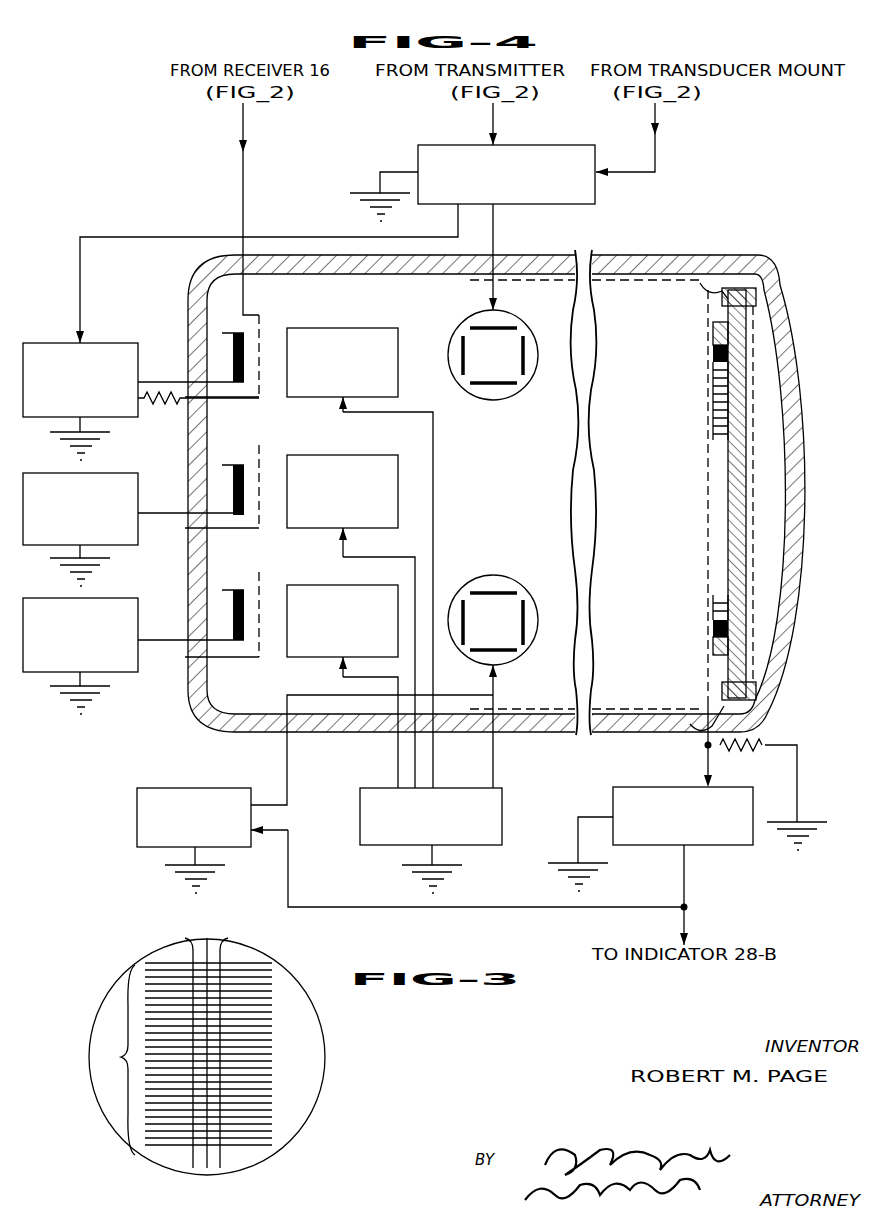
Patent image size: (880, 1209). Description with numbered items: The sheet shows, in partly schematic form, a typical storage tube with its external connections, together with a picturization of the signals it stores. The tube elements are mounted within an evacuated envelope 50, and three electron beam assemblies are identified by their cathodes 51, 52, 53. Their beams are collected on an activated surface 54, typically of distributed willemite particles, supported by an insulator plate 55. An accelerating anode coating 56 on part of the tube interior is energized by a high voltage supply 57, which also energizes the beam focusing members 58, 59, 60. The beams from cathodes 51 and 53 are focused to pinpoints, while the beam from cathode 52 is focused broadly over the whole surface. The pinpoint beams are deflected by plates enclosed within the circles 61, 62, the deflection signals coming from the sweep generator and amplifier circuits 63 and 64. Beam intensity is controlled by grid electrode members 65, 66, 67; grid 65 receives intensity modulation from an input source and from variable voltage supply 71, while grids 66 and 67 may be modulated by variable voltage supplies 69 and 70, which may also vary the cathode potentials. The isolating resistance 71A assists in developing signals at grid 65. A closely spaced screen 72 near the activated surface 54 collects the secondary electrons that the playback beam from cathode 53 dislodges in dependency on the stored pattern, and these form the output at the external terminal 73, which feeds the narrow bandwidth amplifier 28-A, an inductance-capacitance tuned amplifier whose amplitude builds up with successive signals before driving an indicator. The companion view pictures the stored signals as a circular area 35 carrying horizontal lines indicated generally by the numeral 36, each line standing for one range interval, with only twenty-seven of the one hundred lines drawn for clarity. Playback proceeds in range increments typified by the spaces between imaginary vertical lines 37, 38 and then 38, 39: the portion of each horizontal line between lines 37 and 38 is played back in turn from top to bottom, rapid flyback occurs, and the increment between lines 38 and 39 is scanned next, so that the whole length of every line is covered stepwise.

In FIG. 4, the evacuated envelope 50 is at (500, 730).
In FIG. 4, the cathode 51 is at (233, 350).
In FIG. 4, the cathode 52 is at (233, 482).
In FIG. 4, the cathode 53 is at (233, 607).
In FIG. 4, the activated surface 54 is at (728, 436).
In FIG. 4, the insulator plate 55 is at (735, 298).
In FIG. 4, the accelerating anode coating 56 is at (505, 717).
In FIG. 4, the high voltage supply 57 is at (388, 788).
In FIG. 4, the beam focusing member 58 is at (354, 328).
In FIG. 4, the beam focusing member 59 is at (354, 455).
In FIG. 4, the beam focusing member 60 is at (354, 585).
In FIG. 4, the deflection means 61 is at (518, 335).
In FIG. 4, the deflection means 62 is at (523, 604).
In FIG. 4, the sweep generator and amplifier circuit 63 is at (458, 145).
In FIG. 4, the sweep generator and amplifier circuit 64 is at (170, 788).
In FIG. 4, the grid electrode member 65 is at (258, 329).
In FIG. 4, the grid electrode member 66 is at (258, 459).
In FIG. 4, the grid electrode member 67 is at (258, 587).
In FIG. 4, the variable voltage supply 69 is at (94, 473).
In FIG. 4, the variable voltage supply 70 is at (94, 598).
In FIG. 4, the variable voltage supply 71 is at (100, 343).
In FIG. 4, the isolating resistance 71A is at (157, 404).
In FIG. 4, the screen 72 is at (708, 602).
In FIG. 4, the external terminal 73 is at (704, 745).
In FIG. 4, the narrow bandwidth amplifier 28-A is at (640, 787).
In FIG. 3, the circular area 35 is at (118, 978).
In FIG. 3, the horizontal lines 36 is at (121, 1059).
In FIG. 3, the imaginary vertical line 37 is at (184, 938).
In FIG. 3, the imaginary vertical line 38 is at (207, 936).
In FIG. 3, the imaginary vertical line 39 is at (231, 938).